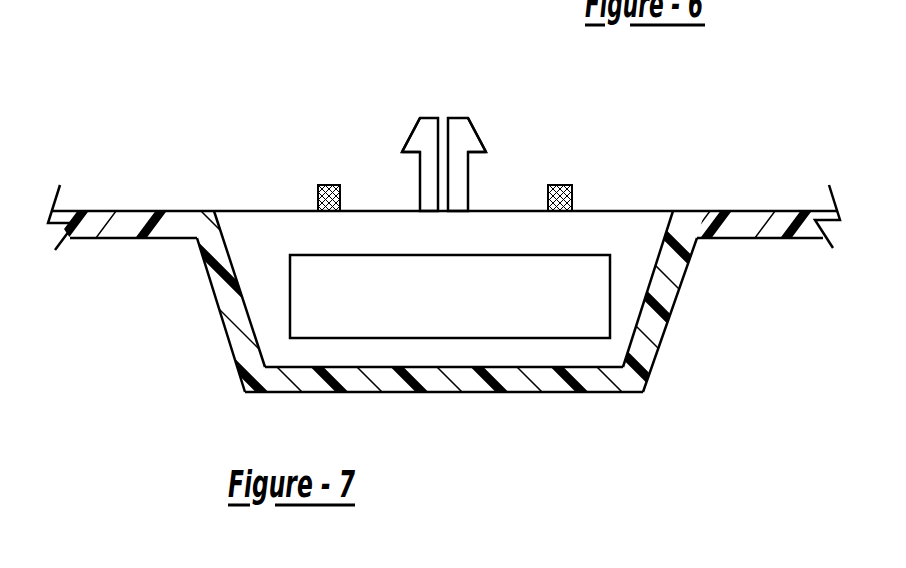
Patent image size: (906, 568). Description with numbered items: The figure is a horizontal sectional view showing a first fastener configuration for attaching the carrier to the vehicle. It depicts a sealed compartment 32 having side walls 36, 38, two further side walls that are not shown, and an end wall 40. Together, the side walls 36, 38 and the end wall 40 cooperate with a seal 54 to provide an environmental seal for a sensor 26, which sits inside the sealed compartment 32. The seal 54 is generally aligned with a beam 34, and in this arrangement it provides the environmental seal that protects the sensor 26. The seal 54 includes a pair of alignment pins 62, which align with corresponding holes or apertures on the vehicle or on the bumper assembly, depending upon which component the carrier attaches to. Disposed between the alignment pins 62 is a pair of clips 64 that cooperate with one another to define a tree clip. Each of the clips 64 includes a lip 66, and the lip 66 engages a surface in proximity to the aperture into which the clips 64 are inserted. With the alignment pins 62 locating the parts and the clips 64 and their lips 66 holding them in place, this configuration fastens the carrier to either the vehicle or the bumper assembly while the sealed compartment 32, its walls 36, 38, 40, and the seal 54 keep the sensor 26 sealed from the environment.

The sensor 26 is at (500, 330).
The sealed compartment 32 is at (450, 305).
The beam 34 is at (119, 211).
The side wall 36 is at (208, 280).
The side wall 38 is at (667, 320).
The end wall 40 is at (392, 392).
The seal 54 is at (249, 211).
The alignment pins 62 is at (323, 185).
The clips 64 is at (428, 118).
The lip 66 is at (393, 170).